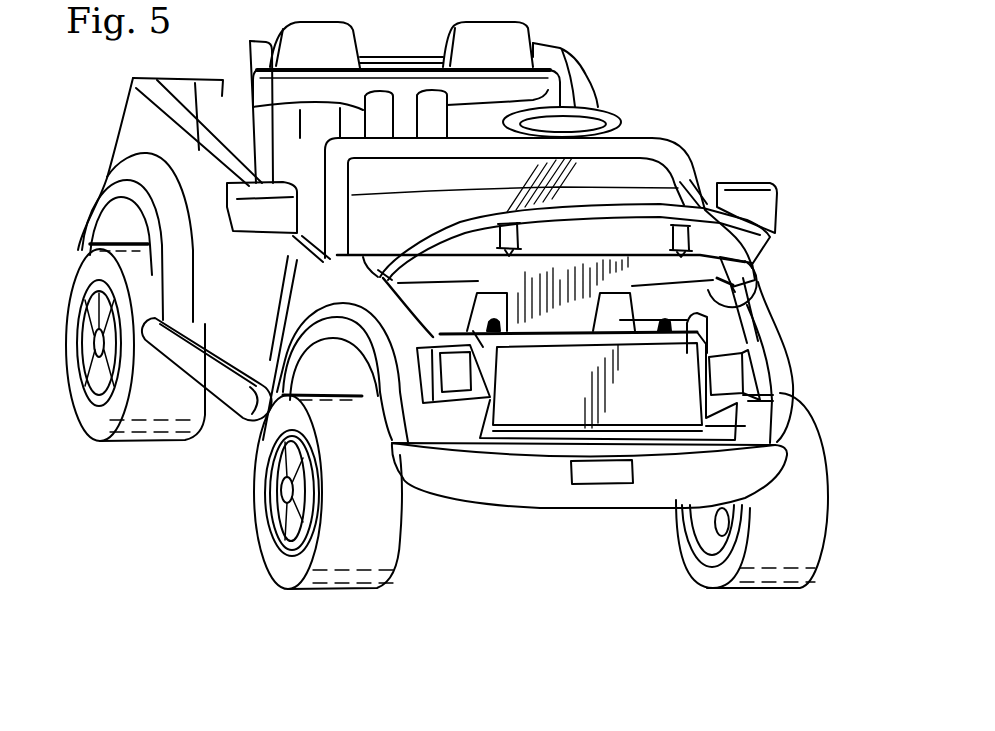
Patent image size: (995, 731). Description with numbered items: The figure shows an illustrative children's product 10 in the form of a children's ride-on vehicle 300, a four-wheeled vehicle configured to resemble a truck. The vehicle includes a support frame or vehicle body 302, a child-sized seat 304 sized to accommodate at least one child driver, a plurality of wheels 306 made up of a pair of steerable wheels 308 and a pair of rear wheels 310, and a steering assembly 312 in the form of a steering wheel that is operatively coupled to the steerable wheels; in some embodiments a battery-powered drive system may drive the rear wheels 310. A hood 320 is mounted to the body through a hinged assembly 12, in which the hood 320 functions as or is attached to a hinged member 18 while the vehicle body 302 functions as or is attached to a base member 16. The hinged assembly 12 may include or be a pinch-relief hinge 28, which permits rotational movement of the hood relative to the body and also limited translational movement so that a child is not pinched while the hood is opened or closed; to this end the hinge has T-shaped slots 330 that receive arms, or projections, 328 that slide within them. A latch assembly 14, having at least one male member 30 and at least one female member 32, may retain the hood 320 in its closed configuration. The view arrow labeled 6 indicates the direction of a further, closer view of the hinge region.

The children's product 10 is at (757, 92).
The children's ride-on vehicle 300 is at (790, 135).
The vehicle body 302 is at (116, 110).
The child-sized seat 304 is at (297, 133).
The wheels 306 is at (117, 449).
The steerable wheels 308 is at (360, 596).
The rear wheels 310 is at (172, 443).
The steering assembly 312 is at (614, 122).
The hood 320 is at (700, 210).
The arms 328 is at (383, 272).
The slots 330 is at (410, 284).
The female member 32 is at (668, 244).
The male member 30 is at (655, 323).
The base member 16 is at (395, 290).
The hinged assembly 12 is at (783, 255).
The latch assembly 14 is at (805, 345).
The hinged member 18 is at (748, 272).
The pinch-relief hinge 28 is at (764, 286).
The view direction for FIG. 6 is at (745, 258).